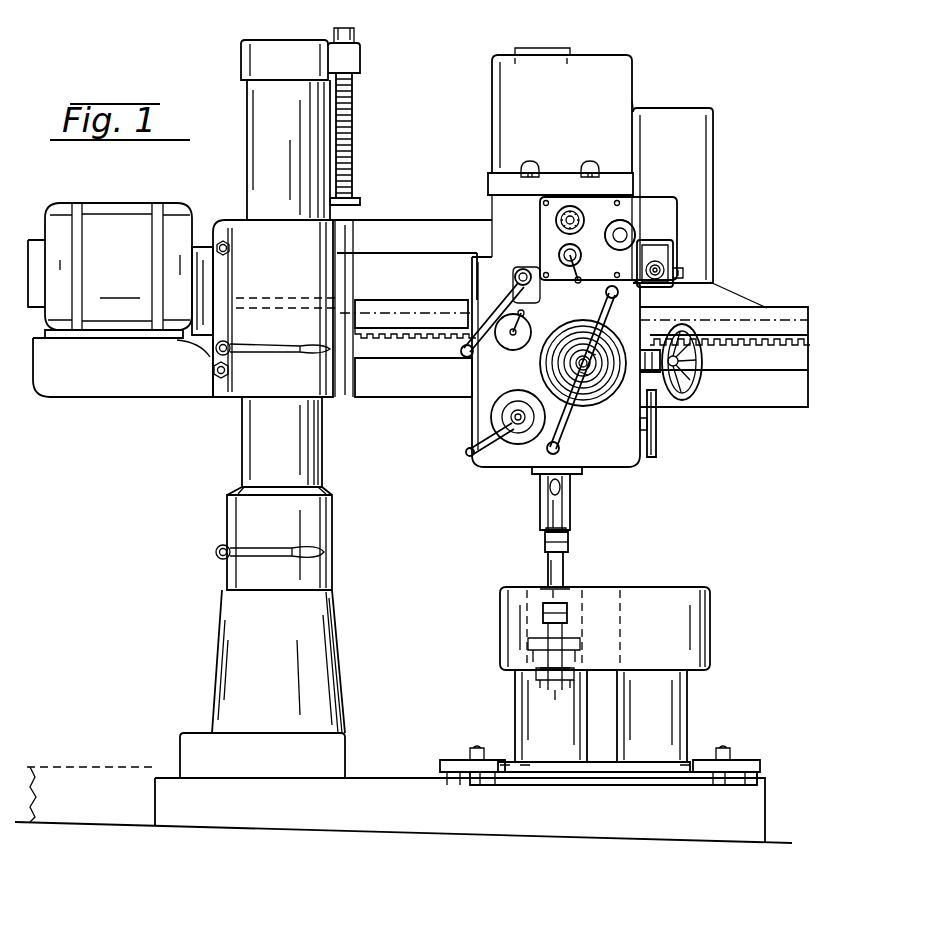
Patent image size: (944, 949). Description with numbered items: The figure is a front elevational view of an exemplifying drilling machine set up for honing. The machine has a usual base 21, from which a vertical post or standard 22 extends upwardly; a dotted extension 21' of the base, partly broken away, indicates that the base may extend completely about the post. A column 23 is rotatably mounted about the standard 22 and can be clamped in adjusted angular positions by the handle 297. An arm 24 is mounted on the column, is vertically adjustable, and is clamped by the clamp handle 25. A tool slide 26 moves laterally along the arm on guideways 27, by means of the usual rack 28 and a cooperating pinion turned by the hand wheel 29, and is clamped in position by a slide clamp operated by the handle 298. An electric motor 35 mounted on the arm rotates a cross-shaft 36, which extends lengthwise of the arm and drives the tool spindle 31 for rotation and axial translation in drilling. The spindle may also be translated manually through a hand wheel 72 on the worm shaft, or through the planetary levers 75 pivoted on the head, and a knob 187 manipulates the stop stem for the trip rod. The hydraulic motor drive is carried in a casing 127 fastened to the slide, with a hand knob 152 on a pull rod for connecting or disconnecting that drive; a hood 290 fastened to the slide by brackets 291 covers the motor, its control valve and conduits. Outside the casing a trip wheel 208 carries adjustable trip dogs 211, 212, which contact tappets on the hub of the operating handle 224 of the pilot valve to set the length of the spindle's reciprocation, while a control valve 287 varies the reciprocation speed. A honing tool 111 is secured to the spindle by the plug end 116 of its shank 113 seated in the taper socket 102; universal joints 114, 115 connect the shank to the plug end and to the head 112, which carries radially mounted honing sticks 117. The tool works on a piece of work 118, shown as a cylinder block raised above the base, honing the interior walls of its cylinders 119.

The base 21 is at (403, 826).
The dotted extension of the base 21' is at (91, 783).
The vertical post or standard 22 is at (328, 628).
The column 23 is at (322, 460).
The arm 24 is at (416, 232).
The clamp handle 25 is at (274, 349).
The tool slide 26 is at (644, 80).
The guideways 27 is at (402, 318).
The rack 28 is at (762, 345).
The hand wheel 29 is at (700, 384).
The spindle 31 is at (568, 492).
The electric motor 35 is at (132, 208).
The cross-shaft 36 is at (283, 291).
The hand wheel 72 is at (657, 442).
The planetary levers 75 is at (573, 434).
The taper socket 102 is at (562, 520).
The honing tool 111 is at (564, 580).
The head 112 is at (577, 660).
The shank 113 is at (548, 566).
The universal joint 114 is at (569, 540).
The universal joint 115 is at (569, 614).
The plug end 116 is at (545, 534).
The honing sticks 117 is at (550, 692).
The piece of work 118 is at (636, 598).
The cylinders 119 is at (520, 622).
The casing 127 is at (636, 234).
The hand knob 152 is at (622, 234).
The knob 187 is at (576, 369).
The trip wheel 208 is at (556, 222).
The trip dog 211 is at (562, 208).
The trip dog 212 is at (584, 216).
The operating handle 224 is at (571, 270).
The control valve 287 is at (660, 254).
The hood 290 is at (710, 135).
The brackets 291 is at (637, 106).
The handle 297 is at (262, 552).
The handle 298 is at (521, 270).